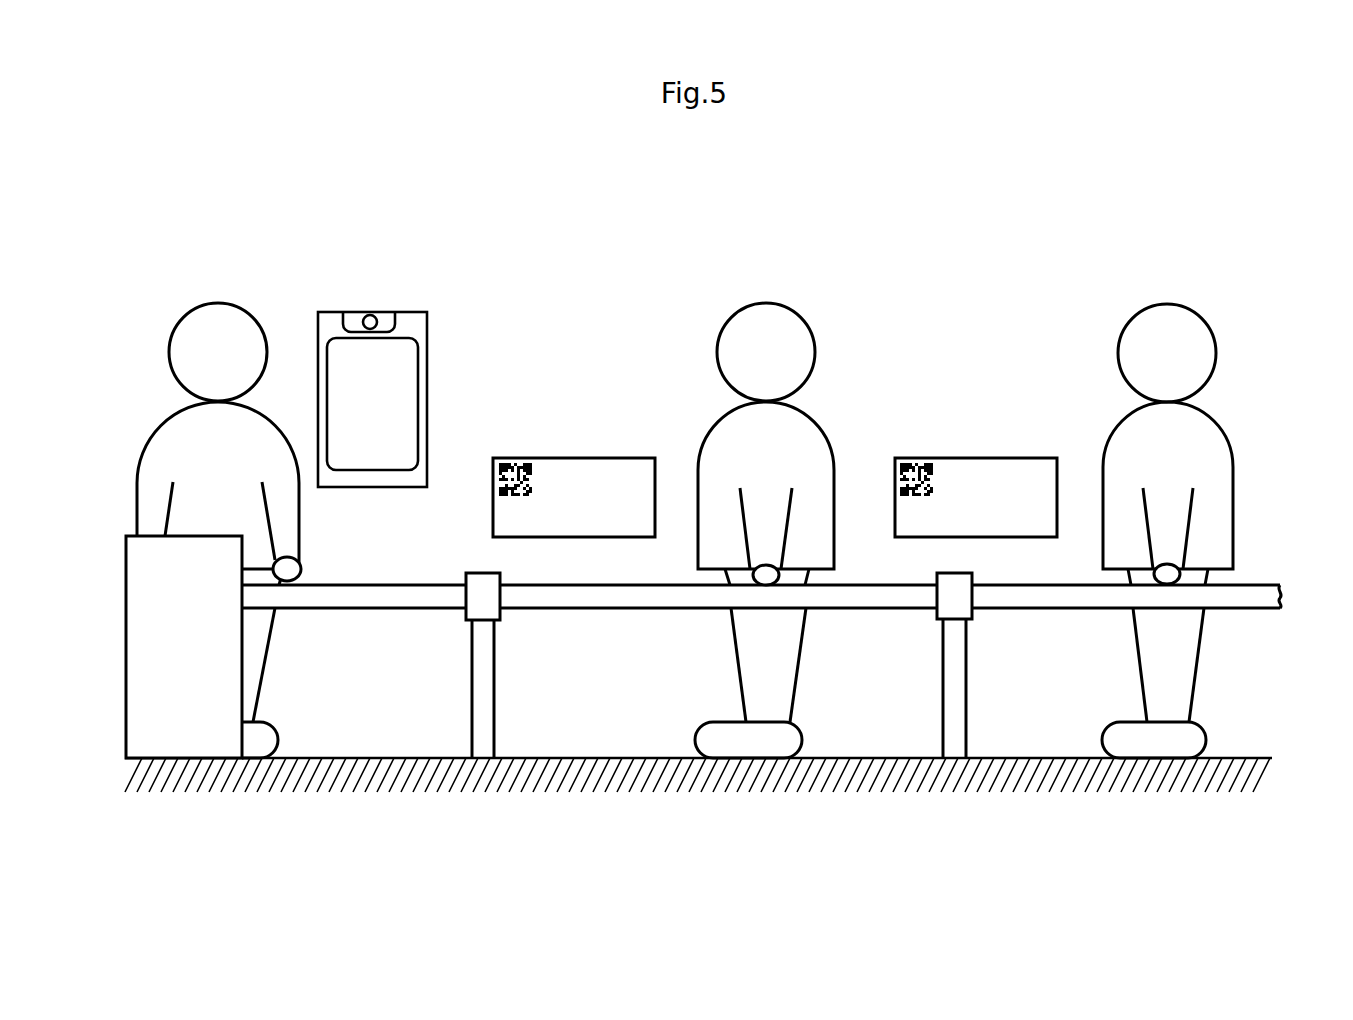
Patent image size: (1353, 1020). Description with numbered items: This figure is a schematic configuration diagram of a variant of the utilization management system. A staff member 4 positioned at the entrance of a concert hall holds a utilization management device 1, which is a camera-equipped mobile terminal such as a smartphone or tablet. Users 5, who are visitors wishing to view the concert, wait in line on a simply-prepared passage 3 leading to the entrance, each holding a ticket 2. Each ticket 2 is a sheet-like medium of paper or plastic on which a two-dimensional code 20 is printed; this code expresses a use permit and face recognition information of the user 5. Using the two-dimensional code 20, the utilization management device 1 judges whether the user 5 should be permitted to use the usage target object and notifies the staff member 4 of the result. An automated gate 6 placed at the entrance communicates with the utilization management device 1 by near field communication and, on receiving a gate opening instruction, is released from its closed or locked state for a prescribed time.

The utilization management device 1 is at (428, 340).
The ticket 2 is at (595, 457).
The passage 3 is at (415, 585).
The staff member 4 is at (277, 423).
The user 5 is at (815, 424).
The automated gate 6 is at (142, 536).
The two-dimensional code 20 is at (511, 460).